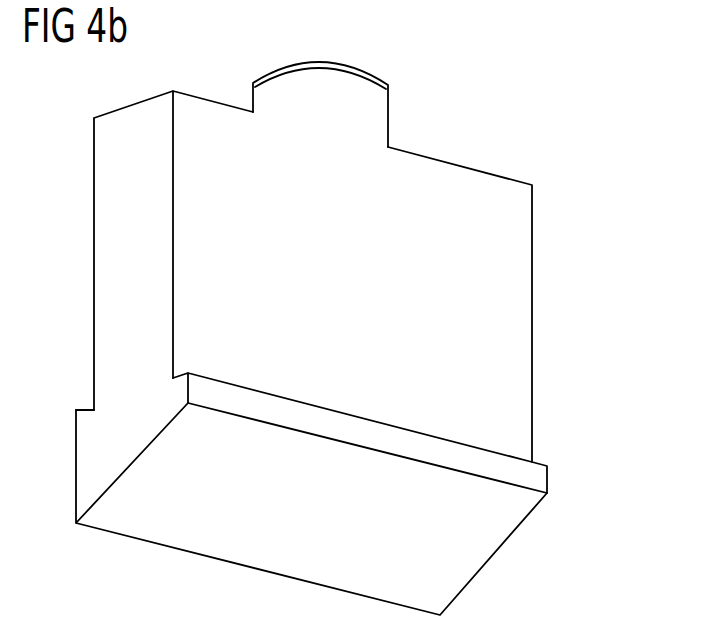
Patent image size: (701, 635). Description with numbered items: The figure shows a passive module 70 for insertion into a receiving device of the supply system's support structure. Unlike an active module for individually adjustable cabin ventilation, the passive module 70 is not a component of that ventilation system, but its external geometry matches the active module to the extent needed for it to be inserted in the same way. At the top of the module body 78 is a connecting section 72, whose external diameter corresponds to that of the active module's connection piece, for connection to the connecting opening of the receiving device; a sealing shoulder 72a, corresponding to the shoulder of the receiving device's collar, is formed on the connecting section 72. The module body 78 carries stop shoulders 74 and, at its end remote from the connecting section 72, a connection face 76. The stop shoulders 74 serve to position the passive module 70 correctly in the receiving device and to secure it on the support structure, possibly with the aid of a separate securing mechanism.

The passive module 70 is at (300, 307).
The connecting section 72 is at (347, 73).
The sealing shoulder 72a is at (327, 61).
The stop shoulders 74 is at (89, 397).
The connection face 76 is at (480, 550).
The module body 78 is at (513, 287).